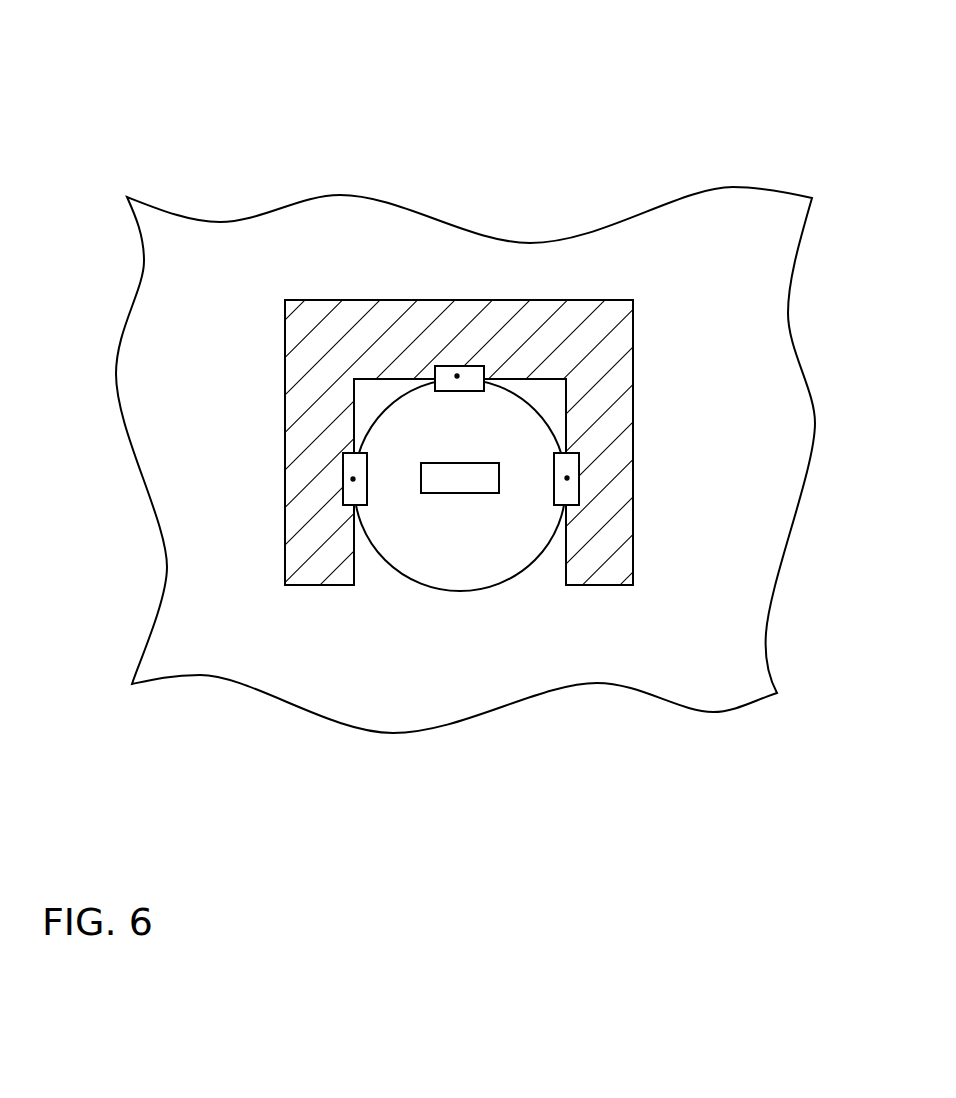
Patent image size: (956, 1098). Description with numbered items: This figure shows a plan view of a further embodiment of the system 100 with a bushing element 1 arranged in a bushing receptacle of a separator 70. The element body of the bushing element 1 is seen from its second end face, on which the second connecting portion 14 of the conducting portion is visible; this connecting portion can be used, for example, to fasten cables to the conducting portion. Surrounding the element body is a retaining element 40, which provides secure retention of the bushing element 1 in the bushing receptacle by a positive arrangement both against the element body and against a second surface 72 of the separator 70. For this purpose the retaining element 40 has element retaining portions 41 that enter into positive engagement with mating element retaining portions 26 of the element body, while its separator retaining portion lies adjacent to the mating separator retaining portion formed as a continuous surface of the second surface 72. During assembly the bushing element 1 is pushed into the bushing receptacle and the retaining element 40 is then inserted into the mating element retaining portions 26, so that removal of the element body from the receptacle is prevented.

The system 100 is at (173, 113).
The bushing element 1 is at (430, 753).
The separator 70 is at (785, 217).
The second surface 72 is at (737, 289).
The retaining element 40 is at (566, 318).
The element retaining portions 41 is at (462, 366).
The mating element retaining portions 26 is at (457, 376).
The second connecting portion 14 is at (463, 482).